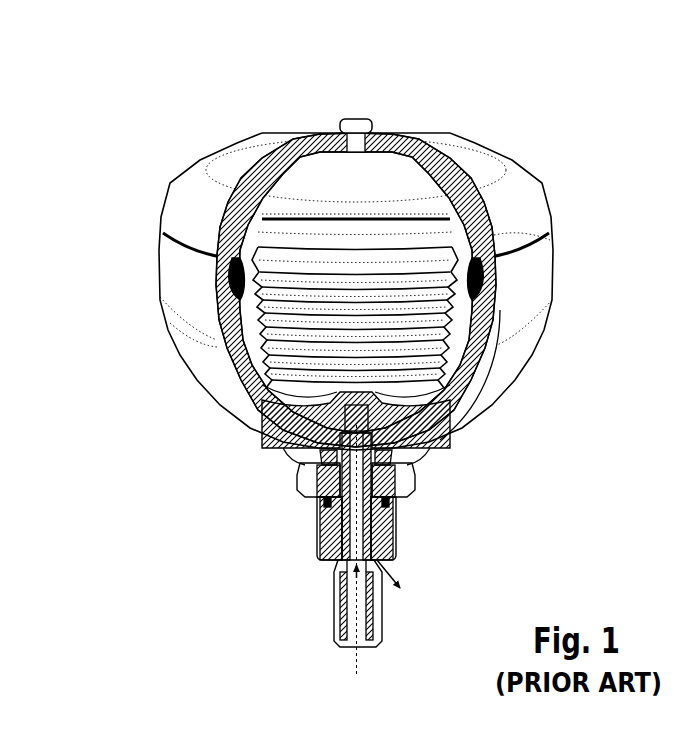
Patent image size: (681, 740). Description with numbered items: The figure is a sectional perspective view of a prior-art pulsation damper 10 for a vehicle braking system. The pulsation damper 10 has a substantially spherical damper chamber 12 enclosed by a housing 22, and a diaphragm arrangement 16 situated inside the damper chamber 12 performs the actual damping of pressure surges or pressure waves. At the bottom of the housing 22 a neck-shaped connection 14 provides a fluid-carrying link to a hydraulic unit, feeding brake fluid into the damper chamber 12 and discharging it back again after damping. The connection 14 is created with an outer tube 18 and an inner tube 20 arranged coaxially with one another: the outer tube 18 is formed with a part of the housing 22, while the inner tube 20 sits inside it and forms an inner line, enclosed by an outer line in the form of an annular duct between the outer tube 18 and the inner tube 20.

The pulsation damper 10 is at (150, 172).
The damper chamber 12 is at (340, 200).
The connection 14 is at (411, 533).
The diaphragm arrangement 16 is at (373, 212).
The outer tube 18 is at (320, 540).
The inner tube 20 is at (340, 615).
The housing 22 is at (300, 447).